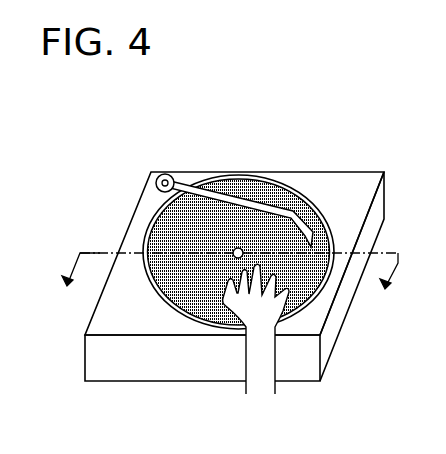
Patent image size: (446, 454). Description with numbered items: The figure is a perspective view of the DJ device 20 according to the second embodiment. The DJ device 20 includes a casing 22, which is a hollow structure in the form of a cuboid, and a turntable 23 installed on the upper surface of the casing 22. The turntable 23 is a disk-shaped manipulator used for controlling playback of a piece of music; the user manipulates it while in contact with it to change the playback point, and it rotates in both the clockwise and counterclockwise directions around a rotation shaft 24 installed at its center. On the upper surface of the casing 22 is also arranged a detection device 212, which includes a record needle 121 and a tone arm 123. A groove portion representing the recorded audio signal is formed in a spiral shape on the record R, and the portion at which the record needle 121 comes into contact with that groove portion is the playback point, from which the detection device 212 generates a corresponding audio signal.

The DJ device 20 is at (226, 234).
The casing 22 is at (327, 342).
The turntable 23 is at (207, 184).
The rotation shaft 24 is at (232, 251).
The detection device 212 is at (266, 208).
The record needle 121 is at (332, 230).
The tone arm 123 is at (304, 199).
The record R is at (255, 177).